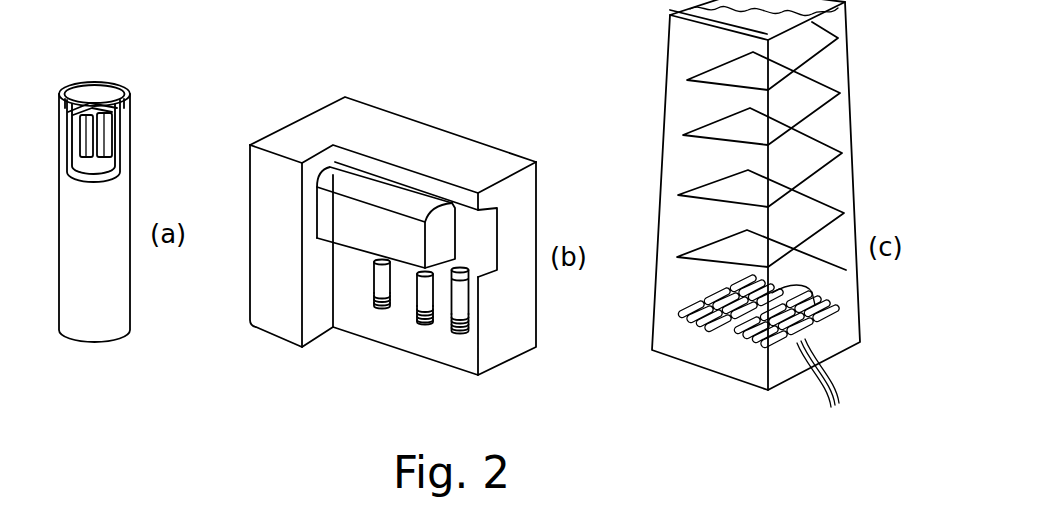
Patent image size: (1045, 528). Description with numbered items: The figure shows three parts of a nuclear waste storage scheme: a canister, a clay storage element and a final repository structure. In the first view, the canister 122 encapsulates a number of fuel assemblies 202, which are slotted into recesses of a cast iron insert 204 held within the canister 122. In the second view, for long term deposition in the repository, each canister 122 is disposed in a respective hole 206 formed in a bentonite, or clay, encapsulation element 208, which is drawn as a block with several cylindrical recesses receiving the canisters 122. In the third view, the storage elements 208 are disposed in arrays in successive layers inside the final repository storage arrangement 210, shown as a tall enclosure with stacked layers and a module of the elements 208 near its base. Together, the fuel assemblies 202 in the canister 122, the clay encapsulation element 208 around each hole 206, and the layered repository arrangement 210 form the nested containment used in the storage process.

The canister 122 is at (110, 343).
The fuel assemblies 202 is at (85, 112).
The cast iron insert 204 is at (112, 157).
The hole 206 is at (472, 309).
The bentonite encapsulation element 208 is at (413, 118).
The final repository storage arrangement 210 is at (665, 80).